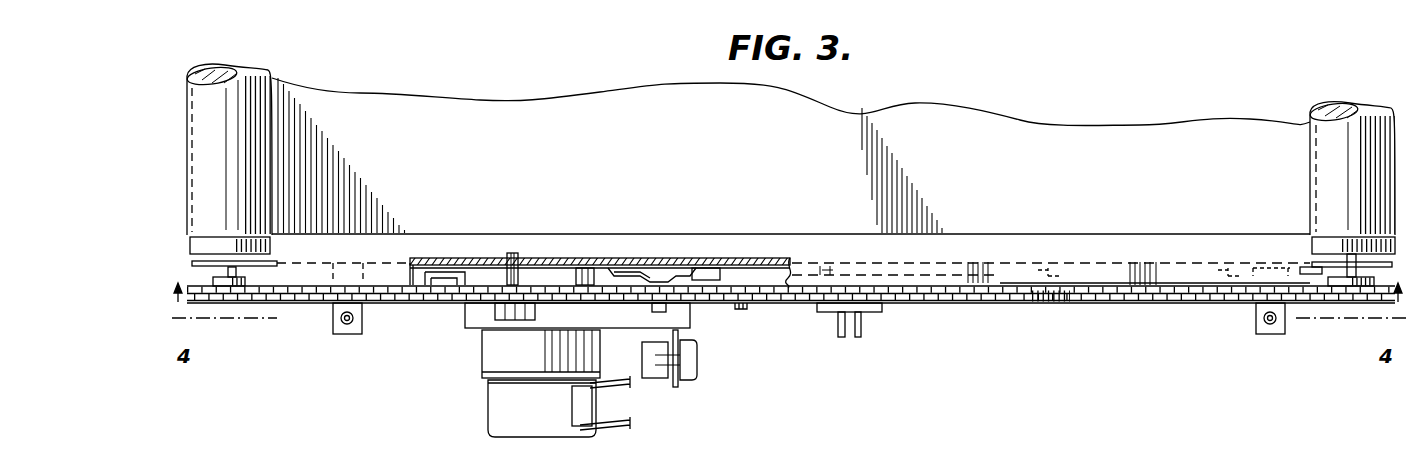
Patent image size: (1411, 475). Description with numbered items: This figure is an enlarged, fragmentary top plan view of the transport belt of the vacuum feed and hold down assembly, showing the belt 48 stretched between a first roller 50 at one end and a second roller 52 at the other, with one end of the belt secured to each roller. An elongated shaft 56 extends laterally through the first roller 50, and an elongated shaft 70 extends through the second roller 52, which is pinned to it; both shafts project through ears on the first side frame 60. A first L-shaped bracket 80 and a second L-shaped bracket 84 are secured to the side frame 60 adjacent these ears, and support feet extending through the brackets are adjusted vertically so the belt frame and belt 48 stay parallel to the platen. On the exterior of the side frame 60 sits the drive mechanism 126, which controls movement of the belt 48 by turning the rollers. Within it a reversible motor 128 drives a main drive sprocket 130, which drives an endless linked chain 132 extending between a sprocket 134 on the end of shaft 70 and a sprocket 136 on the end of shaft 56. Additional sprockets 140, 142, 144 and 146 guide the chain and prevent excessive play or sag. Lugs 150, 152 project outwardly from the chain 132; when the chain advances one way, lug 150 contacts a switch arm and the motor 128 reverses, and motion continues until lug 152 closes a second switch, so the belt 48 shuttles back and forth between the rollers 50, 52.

The belt 48 is at (834, 185).
The first roller 50 is at (1334, 104).
The second roller 52 is at (248, 82).
The elongated shaft 56 is at (1340, 280).
The first side frame 60 is at (1218, 248).
The elongated shaft 70 is at (224, 252).
The first L-shaped bracket 80 is at (1257, 310).
The second L-shaped bracket 84 is at (337, 304).
The drive mechanism 126 is at (413, 315).
The reversible motor 128 is at (488, 405).
The main drive sprocket 130 is at (520, 290).
The endless linked chain 132 is at (740, 303).
The sprocket 134 is at (221, 270).
The sprocket 136 is at (1347, 290).
The sprocket 140 is at (1055, 302).
The sprocket 142 is at (652, 292).
The sprocket 144 is at (580, 290).
The sprocket 146 is at (448, 303).
The lug 150 is at (862, 320).
The lug 152 is at (838, 320).